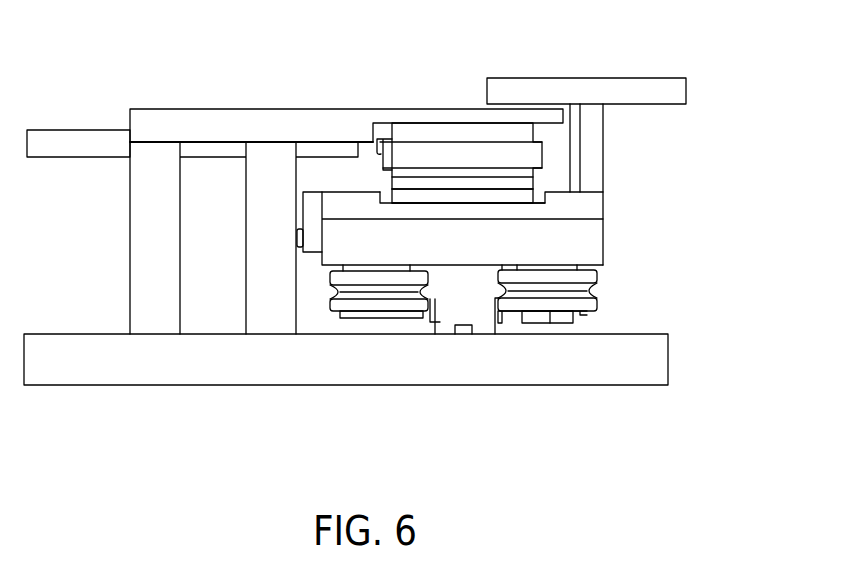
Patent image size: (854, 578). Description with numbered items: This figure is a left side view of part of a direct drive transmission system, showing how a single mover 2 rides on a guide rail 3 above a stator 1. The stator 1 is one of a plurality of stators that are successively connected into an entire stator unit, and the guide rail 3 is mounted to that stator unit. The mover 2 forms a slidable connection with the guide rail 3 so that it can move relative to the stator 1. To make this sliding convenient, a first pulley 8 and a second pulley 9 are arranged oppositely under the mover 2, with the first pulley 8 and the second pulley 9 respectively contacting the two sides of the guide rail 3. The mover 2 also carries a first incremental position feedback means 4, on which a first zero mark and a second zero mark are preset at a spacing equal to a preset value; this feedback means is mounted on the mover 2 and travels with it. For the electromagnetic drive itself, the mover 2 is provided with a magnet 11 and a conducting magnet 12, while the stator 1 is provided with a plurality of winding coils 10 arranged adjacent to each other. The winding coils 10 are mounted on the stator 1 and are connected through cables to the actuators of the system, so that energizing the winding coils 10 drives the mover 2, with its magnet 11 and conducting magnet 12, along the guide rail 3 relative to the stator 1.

The stator 1 is at (336, 122).
The mover 2 is at (593, 78).
The guide rail 3 is at (468, 317).
The first incremental position feedback means 4 is at (298, 248).
The first pulley 8 is at (348, 310).
The second pulley 9 is at (580, 283).
The winding coil 10 is at (517, 149).
The magnet 11 is at (522, 183).
The conducting magnet 12 is at (520, 197).